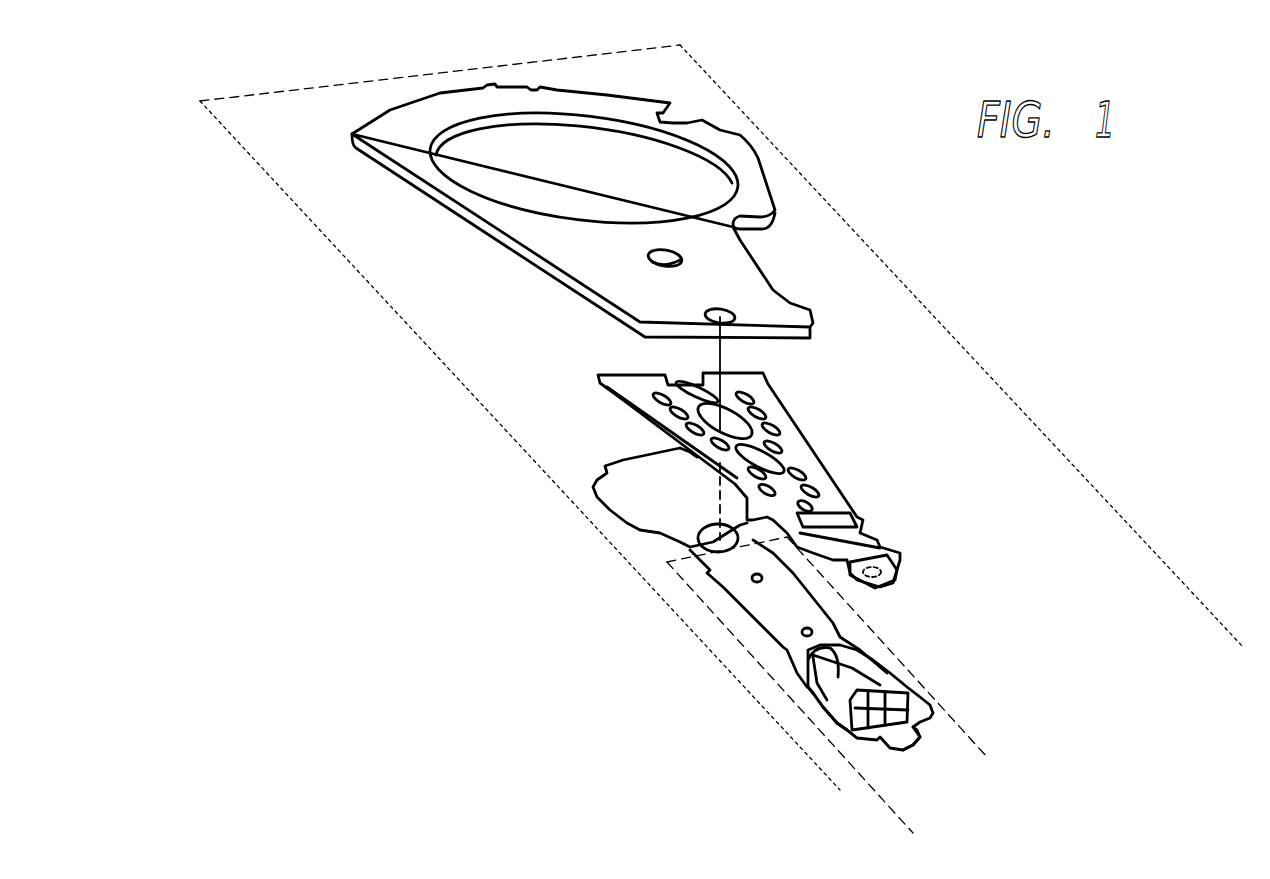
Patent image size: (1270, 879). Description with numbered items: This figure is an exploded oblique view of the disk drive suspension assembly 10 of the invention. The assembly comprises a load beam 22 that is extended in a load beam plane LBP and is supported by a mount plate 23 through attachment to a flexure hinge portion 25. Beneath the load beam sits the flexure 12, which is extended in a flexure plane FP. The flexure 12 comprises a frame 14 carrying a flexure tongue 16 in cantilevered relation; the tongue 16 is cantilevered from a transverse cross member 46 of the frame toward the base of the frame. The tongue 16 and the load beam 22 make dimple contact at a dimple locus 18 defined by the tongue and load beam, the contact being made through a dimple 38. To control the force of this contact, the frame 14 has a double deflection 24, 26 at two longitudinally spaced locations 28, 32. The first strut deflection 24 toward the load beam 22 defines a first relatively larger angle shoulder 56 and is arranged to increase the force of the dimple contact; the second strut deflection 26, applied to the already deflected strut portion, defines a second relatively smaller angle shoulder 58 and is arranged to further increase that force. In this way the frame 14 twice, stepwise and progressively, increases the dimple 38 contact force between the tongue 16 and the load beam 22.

The disk drive suspension assembly 10 is at (915, 233).
The flexure 12 is at (870, 632).
The frame 14 is at (830, 718).
The flexure tongue 16 is at (873, 703).
The dimple locus 18 is at (890, 698).
The load beam 22 is at (803, 455).
The mount plate 23 is at (742, 275).
The first strut deflection 24 is at (815, 695).
The flexure hinge portion 25 is at (632, 470).
The second strut deflection 26 is at (847, 727).
The longitudinally spaced location 28 is at (838, 677).
The longitudinally spaced location 32 is at (920, 697).
The dimple 38 is at (893, 573).
The transverse cross member 46 is at (930, 718).
The first relatively larger angle shoulder 56 is at (820, 710).
The second relatively smaller angle shoulder 58 is at (842, 730).
The load beam plane LBP is at (563, 493).
The flexure plane FP is at (903, 817).